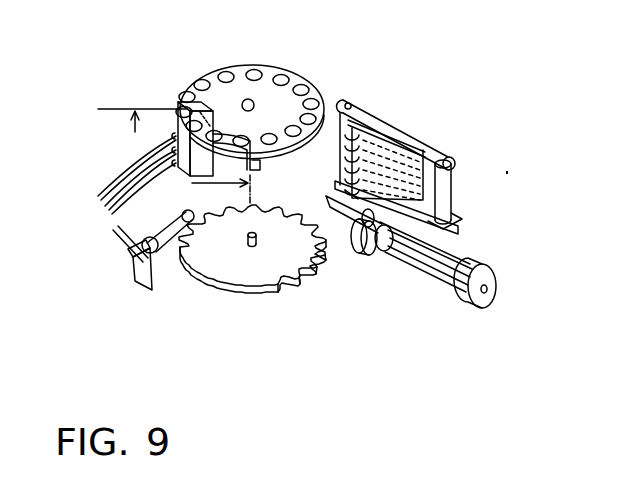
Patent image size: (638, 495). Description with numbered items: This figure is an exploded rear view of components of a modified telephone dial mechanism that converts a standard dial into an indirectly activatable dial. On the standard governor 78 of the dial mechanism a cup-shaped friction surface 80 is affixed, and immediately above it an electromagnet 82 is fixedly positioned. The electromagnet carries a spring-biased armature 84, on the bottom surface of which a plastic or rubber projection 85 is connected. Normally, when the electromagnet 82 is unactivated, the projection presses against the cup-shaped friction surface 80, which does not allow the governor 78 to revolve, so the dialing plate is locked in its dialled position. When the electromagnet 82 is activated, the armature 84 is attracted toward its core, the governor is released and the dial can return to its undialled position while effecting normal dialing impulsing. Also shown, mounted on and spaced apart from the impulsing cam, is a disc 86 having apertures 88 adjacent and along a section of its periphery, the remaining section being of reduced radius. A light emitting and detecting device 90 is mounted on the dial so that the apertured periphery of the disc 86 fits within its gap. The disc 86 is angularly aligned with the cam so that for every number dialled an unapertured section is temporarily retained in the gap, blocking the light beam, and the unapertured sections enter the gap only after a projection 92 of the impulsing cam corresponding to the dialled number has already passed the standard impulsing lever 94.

The governor 78 is at (432, 278).
The cup-shaped friction surface 80 is at (382, 253).
The electromagnet 82 is at (372, 152).
The spring-biased armature 84 is at (210, 268).
The plastic or rubber projection 85 is at (358, 253).
The disc 86 is at (213, 103).
The apertures 88 is at (270, 64).
The light emitting and detecting device 90 is at (178, 123).
The projection of the impulsing cam 92 is at (308, 284).
The standard impulsing lever 94 is at (142, 258).